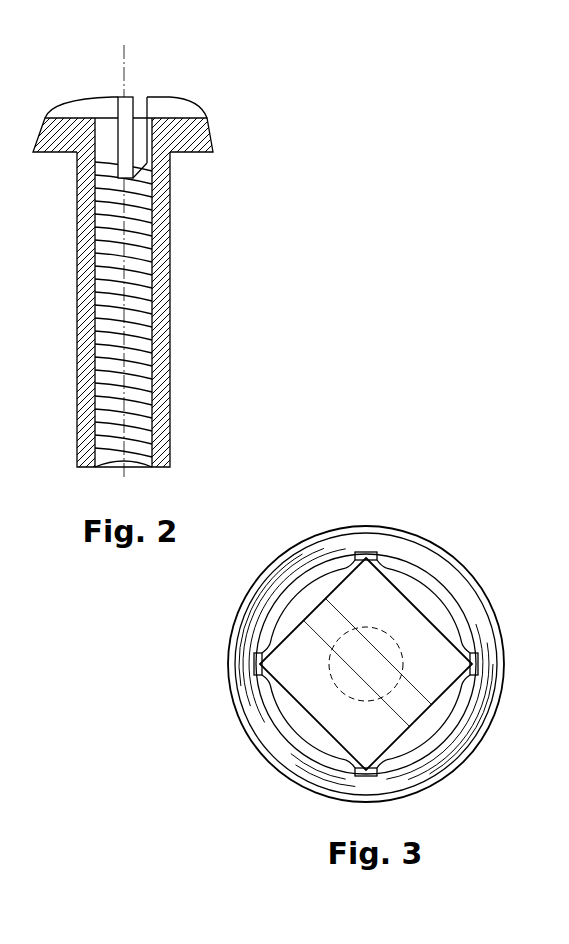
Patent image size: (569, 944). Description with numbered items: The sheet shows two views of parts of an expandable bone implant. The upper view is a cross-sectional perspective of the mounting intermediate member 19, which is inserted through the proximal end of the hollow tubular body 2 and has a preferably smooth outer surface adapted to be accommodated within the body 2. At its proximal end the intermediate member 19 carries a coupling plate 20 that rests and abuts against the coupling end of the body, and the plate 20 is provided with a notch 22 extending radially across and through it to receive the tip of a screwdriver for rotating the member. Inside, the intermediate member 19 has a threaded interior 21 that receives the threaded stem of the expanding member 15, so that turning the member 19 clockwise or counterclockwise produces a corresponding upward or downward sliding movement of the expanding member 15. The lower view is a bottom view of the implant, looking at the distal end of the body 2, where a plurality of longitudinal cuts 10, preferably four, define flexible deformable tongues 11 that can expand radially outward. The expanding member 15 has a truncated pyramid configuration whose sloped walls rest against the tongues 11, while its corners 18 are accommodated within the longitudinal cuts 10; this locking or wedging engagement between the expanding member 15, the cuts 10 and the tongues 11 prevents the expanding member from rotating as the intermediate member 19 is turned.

In FIG. 3, the body 2 is at (262, 752).
In FIG. 3, the longitudinal cuts 10 is at (360, 552).
In FIG. 3, the deformable tongues 11 is at (450, 583).
In FIG. 3, the expanding member 15 is at (366, 664).
In FIG. 3, the corners 18 is at (366, 552).
In FIG. 2, the mounting intermediate member 19 is at (170, 308).
In FIG. 2, the coupling plate 20 is at (208, 128).
In FIG. 2, the threaded interior 21 is at (97, 355).
In FIG. 2, the notch 22 is at (131, 100).